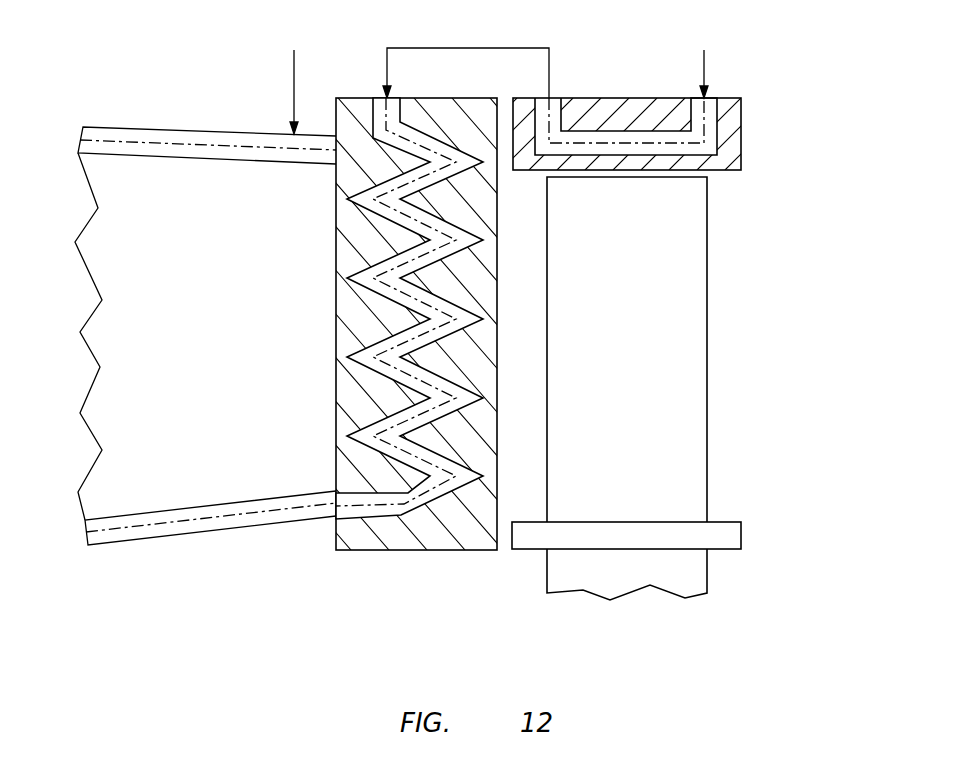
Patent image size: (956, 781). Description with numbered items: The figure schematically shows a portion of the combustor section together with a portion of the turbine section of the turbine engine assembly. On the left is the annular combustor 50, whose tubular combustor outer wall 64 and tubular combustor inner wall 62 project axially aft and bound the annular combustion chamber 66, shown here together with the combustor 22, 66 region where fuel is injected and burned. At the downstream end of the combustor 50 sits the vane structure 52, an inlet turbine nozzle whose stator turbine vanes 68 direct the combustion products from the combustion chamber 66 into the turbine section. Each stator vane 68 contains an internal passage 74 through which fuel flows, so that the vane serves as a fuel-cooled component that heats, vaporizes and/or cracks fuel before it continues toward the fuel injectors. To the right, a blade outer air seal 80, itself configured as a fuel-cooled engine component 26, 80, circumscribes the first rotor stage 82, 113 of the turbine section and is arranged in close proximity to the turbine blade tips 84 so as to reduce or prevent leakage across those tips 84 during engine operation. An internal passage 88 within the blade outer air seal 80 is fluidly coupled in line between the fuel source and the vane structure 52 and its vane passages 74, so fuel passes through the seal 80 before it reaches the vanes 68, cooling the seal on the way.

The annular combustor 50 is at (82, 112).
The combustor outer wall 64 is at (170, 128).
The combustor inner wall 62 is at (153, 538).
The resilient seal 22 is at (142, 336).
The combustion chamber 66 is at (210, 373).
The vane structure 52 is at (390, 573).
The stator turbine vane 68 is at (458, 550).
The internal passage 74 is at (373, 297).
The fuel-cooled engine component 26 is at (663, 147).
The blade outer air seal 80 is at (742, 130).
The turbine blade tip 84 is at (682, 165).
The internal passage 88 is at (712, 115).
The first rotor stage 82 is at (718, 388).
The HPT rotor 113 is at (742, 256).